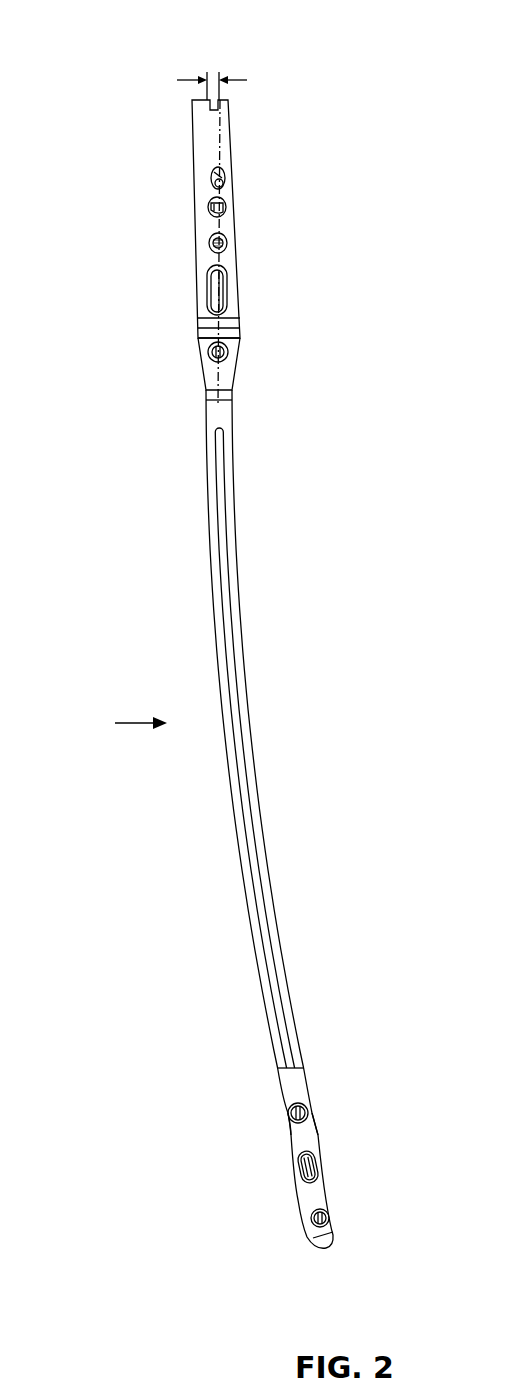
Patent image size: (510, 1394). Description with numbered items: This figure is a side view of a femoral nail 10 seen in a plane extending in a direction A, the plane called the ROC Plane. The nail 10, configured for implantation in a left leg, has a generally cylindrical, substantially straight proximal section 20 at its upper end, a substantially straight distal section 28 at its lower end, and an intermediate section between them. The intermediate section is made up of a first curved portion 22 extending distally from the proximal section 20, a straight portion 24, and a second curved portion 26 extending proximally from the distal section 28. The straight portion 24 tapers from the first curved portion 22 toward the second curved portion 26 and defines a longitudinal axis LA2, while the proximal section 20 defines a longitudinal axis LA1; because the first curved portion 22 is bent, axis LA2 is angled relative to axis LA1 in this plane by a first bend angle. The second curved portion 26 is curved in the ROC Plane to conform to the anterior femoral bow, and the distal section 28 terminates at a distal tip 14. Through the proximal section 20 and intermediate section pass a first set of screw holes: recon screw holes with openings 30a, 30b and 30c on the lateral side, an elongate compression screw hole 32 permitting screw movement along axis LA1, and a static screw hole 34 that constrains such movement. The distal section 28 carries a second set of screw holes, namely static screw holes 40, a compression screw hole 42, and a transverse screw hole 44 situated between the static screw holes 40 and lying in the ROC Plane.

The femoral nail 10 is at (118, 42).
The distal tip 14 is at (331, 1250).
The proximal section 20 is at (195, 190).
The first curved portion 22 is at (235, 323).
The straight portion 24 is at (200, 367).
The second curved portion 26 is at (237, 566).
The distal section 28 is at (308, 1090).
The recon screw hole opening 30a is at (227, 174).
The recon screw hole opening 30b is at (228, 207).
The recon screw hole opening 30c is at (228, 242).
The compression screw hole 32 is at (212, 291).
The static screw hole 34 is at (228, 353).
The static screw holes 40 is at (291, 1109).
The compression screw hole 42 is at (300, 1166).
The transverse screw hole 44 is at (315, 1133).
The longitudinal axis LA1 is at (205, 87).
The longitudinal axis LA2 is at (220, 90).
The direction A is at (129, 724).